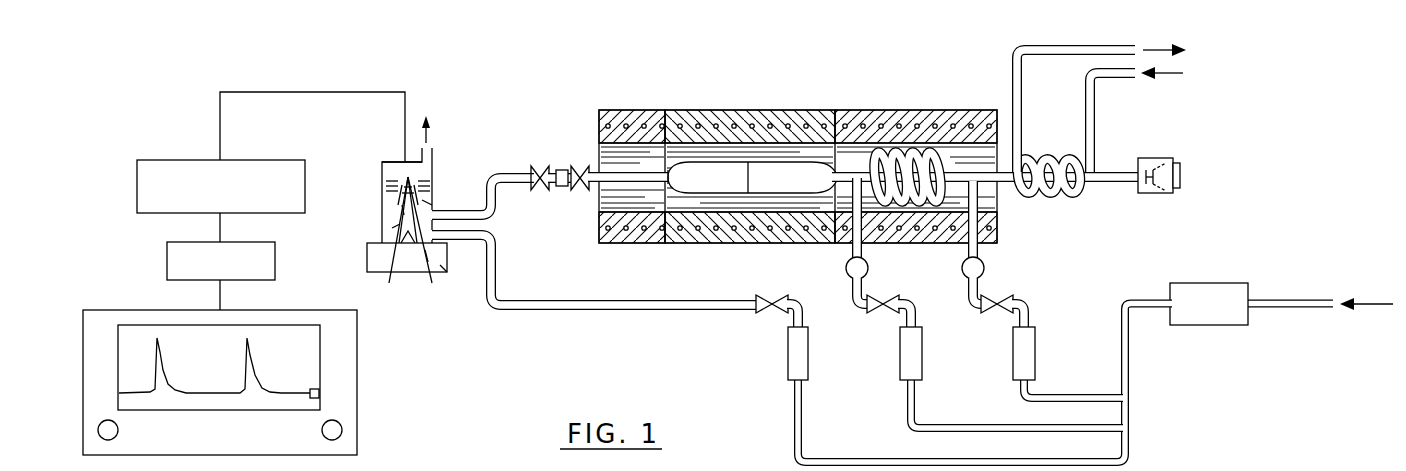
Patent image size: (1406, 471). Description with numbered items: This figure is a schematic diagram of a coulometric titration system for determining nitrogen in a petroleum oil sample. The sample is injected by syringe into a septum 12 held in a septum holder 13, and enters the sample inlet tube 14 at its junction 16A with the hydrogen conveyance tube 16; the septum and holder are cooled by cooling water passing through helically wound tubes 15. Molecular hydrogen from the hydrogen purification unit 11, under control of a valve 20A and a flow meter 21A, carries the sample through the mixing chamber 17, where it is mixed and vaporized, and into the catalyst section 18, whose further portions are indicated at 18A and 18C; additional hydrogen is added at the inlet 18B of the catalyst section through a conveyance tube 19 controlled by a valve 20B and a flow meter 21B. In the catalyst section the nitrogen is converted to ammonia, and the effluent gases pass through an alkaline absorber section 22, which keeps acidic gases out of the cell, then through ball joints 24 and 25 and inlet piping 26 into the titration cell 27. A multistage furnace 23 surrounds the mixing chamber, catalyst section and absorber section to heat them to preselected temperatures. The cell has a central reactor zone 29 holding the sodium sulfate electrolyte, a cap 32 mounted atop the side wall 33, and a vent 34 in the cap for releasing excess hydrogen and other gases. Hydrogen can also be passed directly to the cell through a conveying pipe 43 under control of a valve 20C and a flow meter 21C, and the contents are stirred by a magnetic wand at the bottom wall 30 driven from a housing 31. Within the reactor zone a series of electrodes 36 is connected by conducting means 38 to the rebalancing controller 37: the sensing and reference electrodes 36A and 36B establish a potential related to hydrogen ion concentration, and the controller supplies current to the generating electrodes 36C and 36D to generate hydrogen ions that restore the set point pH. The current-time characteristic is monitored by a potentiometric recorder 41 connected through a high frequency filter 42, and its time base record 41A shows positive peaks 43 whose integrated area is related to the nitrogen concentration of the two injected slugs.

The hydrogen purification unit 11 is at (1222, 283).
The septum 12 is at (1182, 168).
The septum holder 13 is at (1153, 195).
The sample inlet tube 14 is at (1117, 182).
The cooling water tubes 15 is at (1120, 80).
The hydrogen conveyance tube 16 is at (995, 197).
The junction 16A is at (972, 175).
The mixing chamber 17 is at (909, 138).
The catalyst section 18 is at (786, 166).
The combustion tube body 18A is at (748, 162).
The inlet of catalyst section 18B is at (840, 170).
The combustion tube inlet 18C is at (662, 158).
The conveyance tube 19 is at (850, 250).
The valve 20A is at (997, 302).
The valve 20B is at (883, 302).
The valve 20C is at (772, 312).
The flow meter 21A is at (1035, 345).
The flow meter 21B is at (922, 345).
The flow meter 21C is at (808, 345).
The alkaline absorber section 22 is at (615, 177).
The multistage furnace 23 is at (710, 100).
The ball joint 24 is at (578, 166).
The ball joint 25 is at (537, 174).
The inlet piping 26 is at (497, 213).
The titration cell 27 is at (376, 176).
The central reactor zone 29 is at (392, 224).
The bottom wall 30 is at (407, 276).
The housing 31 is at (446, 272).
The cap 32 is at (397, 161).
The side wall 33 is at (431, 205).
The vent 34 is at (428, 143).
The electrodes 36 is at (418, 171).
The sensing electrode 36A is at (397, 203).
The reference electrode 36B is at (362, 216).
The generating electrode 36C is at (440, 258).
The generating electrode 36D is at (430, 196).
The rebalancing controller 37 is at (178, 160).
The conducting means 38 is at (315, 92).
The potentiometric recorder 41 is at (254, 382).
The time base record 41A is at (303, 358).
The high frequency filter 42 is at (167, 260).
The positive peaks / conveying pipe 43 is at (623, 310).